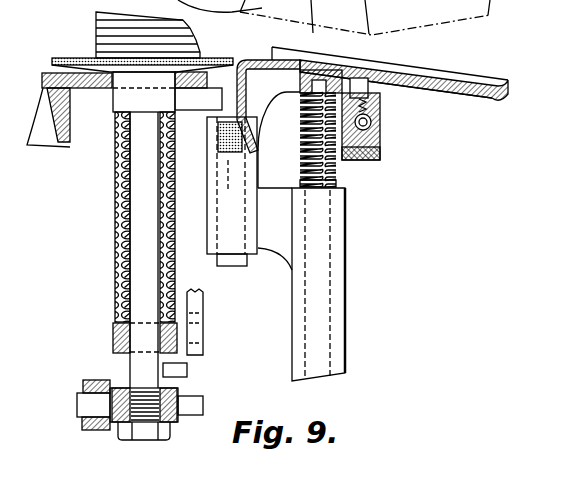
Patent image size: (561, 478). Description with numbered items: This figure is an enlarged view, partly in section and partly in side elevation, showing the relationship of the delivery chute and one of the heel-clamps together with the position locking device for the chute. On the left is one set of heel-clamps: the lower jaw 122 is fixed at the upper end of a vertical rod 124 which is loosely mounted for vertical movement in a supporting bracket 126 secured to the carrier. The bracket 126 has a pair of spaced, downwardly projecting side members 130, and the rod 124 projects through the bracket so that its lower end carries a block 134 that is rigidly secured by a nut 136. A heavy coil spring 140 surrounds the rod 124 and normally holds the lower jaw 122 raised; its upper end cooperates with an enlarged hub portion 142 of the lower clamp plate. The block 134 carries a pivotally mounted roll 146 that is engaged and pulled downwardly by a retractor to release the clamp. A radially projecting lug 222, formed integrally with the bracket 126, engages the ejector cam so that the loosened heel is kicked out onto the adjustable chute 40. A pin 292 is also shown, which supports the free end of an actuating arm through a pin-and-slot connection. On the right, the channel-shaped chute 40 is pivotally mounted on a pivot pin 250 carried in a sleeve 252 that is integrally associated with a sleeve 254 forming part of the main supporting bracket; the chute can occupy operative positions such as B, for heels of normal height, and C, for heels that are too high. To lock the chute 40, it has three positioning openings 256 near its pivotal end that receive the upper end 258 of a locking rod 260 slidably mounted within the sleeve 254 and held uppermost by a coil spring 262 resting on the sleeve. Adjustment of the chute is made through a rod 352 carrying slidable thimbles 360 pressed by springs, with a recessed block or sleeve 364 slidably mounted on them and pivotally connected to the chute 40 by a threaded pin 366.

The lower jaw 122 is at (84, 58).
The supporting bracket 126 is at (85, 83).
The enlarged hub portion 142 is at (158, 102).
The radially projecting lug 222 is at (218, 88).
The vertical rod 124 is at (143, 208).
The coil spring 140 is at (120, 228).
The side members 130 is at (117, 297).
The pin 292 is at (187, 368).
The block 134 is at (180, 390).
The roll 146 is at (98, 382).
The nut 136 is at (147, 432).
The operative position B is at (268, 90).
The operative position C is at (428, 44).
The rod 352 is at (440, 118).
The adjustable chute 40 is at (481, 98).
The threaded pin 366 is at (392, 82).
The positioning openings 256 is at (332, 70).
The upper end of locking rod 258 is at (381, 100).
The recessed block or sleeve 364 is at (380, 130).
The slidable thimbles 360 is at (380, 153).
The locking rod 260 is at (336, 166).
The coil spring 262 is at (333, 182).
The sleeve 254 is at (337, 235).
The pivot pin 250 is at (232, 150).
The sleeve 252 is at (233, 227).